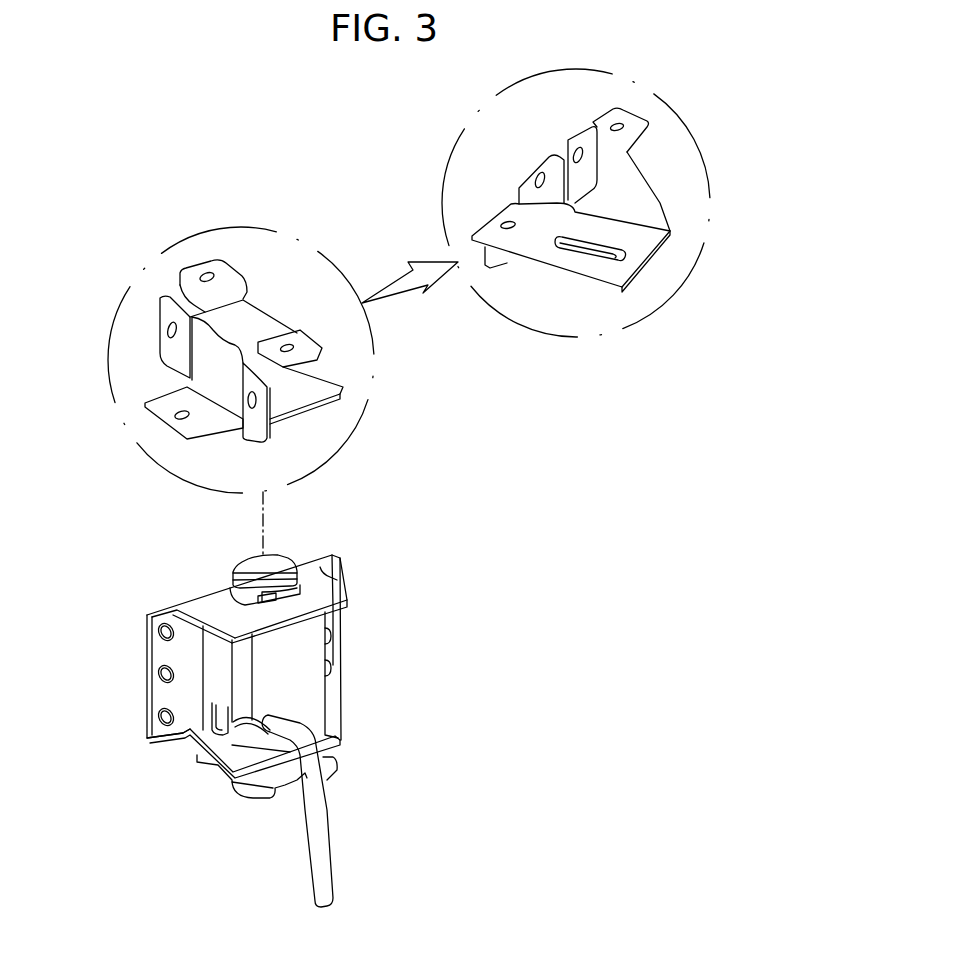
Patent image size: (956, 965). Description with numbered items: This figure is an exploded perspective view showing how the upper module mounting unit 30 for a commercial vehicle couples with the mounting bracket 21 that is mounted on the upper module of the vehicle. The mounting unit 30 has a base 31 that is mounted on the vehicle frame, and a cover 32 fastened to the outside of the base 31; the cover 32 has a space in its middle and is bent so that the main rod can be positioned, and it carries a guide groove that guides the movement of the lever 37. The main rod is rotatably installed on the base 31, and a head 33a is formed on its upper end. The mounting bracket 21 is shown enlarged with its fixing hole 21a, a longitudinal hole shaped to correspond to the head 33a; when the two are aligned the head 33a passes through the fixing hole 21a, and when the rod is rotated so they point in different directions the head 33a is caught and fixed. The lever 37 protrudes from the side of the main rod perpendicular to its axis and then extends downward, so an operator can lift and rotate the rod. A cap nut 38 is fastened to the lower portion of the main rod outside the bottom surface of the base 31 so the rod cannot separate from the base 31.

The mounting bracket 21 is at (242, 322).
The fixing hole 21a is at (583, 246).
The upper module mounting unit 30 is at (267, 700).
The base 31 is at (203, 598).
The cover 32 is at (298, 657).
The head 33a is at (278, 559).
The lever 37 is at (318, 829).
The cap nut 38 is at (183, 748).